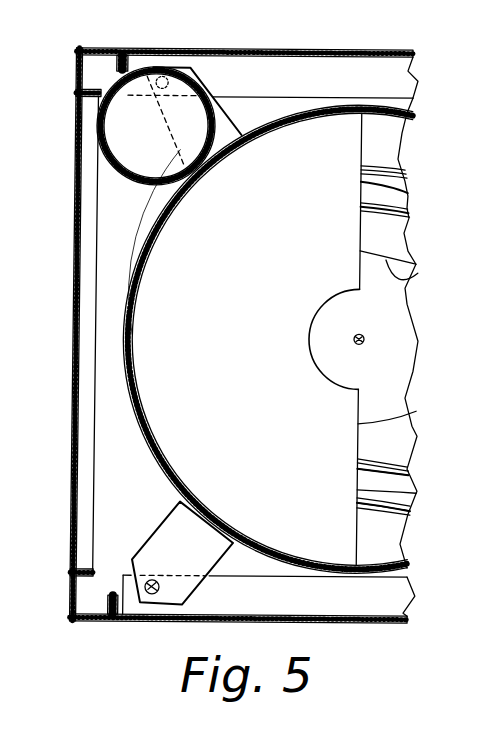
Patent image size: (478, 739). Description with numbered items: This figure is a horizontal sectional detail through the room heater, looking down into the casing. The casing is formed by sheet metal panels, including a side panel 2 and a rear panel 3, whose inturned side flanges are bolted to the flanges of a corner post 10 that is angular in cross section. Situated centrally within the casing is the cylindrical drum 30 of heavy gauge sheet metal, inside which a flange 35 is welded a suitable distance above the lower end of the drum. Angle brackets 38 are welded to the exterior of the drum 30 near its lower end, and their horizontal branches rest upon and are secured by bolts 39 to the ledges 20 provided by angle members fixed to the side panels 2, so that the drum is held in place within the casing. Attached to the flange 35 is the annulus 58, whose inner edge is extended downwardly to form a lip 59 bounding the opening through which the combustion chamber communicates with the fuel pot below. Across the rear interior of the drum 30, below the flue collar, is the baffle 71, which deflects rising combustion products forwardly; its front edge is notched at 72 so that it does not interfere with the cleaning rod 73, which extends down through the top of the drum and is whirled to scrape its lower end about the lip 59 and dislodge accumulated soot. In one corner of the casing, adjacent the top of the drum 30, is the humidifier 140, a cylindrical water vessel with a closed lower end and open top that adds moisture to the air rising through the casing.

The side panel 2 is at (346, 49).
The rear panel 3 is at (71, 386).
The corner post 10 is at (105, 48).
The ledge 20 is at (395, 80).
The cylindrical drum 30 is at (131, 323).
The flange 35 is at (390, 143).
The angle bracket 38 is at (215, 138).
The bolt 39 is at (162, 588).
The annulus 58 is at (392, 230).
The lip 59 is at (398, 276).
The baffle 71 is at (168, 240).
The notch 72 is at (311, 325).
The cleaning rod 73 is at (360, 332).
The humidifier 140 is at (94, 149).